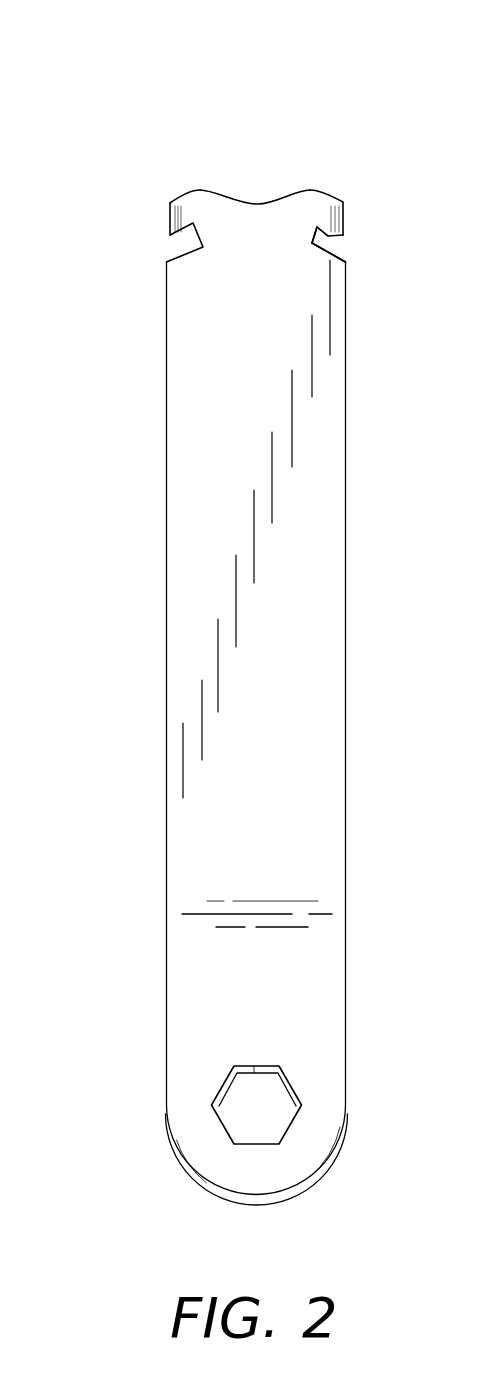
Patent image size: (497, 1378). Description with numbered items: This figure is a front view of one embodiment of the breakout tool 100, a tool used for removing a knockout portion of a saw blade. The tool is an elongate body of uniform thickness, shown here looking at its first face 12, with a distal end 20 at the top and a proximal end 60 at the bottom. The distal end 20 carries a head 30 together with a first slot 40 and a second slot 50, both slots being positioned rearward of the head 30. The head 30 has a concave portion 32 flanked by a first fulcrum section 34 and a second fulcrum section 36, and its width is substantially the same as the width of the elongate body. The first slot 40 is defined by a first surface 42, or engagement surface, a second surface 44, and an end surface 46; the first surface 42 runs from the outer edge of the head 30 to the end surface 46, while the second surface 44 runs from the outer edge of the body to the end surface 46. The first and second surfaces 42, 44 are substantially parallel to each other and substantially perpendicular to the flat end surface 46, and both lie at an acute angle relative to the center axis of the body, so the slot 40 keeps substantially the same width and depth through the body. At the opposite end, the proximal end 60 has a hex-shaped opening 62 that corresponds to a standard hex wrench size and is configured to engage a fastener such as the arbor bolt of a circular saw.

The breakout tool 100 is at (139, 56).
The first face 12 is at (210, 432).
The distal end 20 is at (134, 190).
The head 30 is at (303, 183).
The concave portion 32 is at (258, 203).
The first fulcrum section 34 is at (200, 190).
The second fulcrum section 36 is at (310, 190).
The first slot 40 is at (363, 253).
The first surface 42 is at (343, 236).
The second surface 44 is at (322, 240).
The end surface 46 is at (314, 238).
The second slot 50 is at (180, 242).
The proximal end 60 is at (150, 915).
The hex-shaped opening 62 is at (287, 1081).